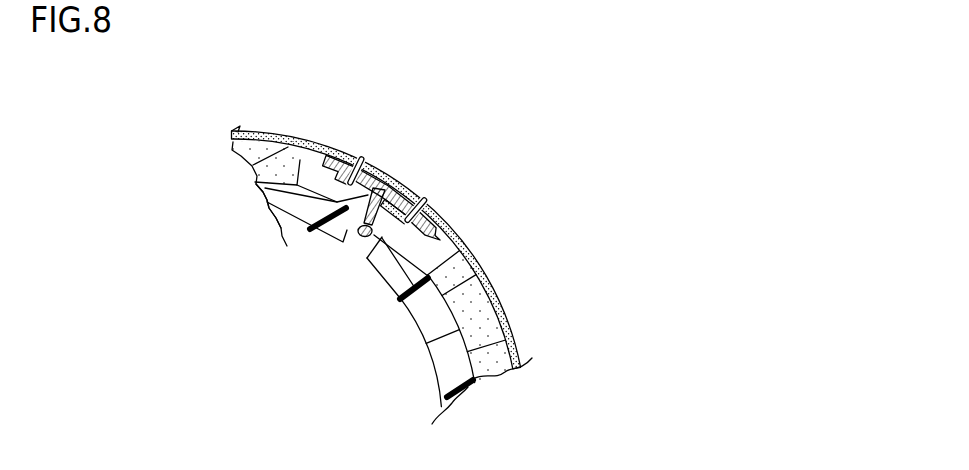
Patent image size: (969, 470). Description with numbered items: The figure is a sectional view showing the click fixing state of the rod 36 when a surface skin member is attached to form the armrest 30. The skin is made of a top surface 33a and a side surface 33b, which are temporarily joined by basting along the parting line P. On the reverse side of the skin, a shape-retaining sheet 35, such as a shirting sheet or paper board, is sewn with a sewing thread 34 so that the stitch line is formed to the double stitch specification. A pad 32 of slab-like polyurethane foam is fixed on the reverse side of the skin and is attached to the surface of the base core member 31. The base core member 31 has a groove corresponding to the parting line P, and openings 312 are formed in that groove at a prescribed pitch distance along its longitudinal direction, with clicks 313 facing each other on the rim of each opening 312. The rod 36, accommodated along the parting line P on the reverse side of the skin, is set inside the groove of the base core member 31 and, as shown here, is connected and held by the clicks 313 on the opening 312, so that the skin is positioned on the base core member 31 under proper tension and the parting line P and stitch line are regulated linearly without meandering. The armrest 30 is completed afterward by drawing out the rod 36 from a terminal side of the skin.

The armrest 30 is at (518, 302).
The base core member 31 is at (447, 360).
The pad 32 is at (497, 358).
The top surface 33a is at (278, 129).
The side surface 33b is at (480, 262).
The sewing thread 34 is at (360, 155).
The shape-retaining sheet 35 is at (278, 217).
The rod 36 is at (361, 231).
The opening 312 is at (364, 239).
The click 313 is at (358, 228).
The parting line P is at (392, 178).